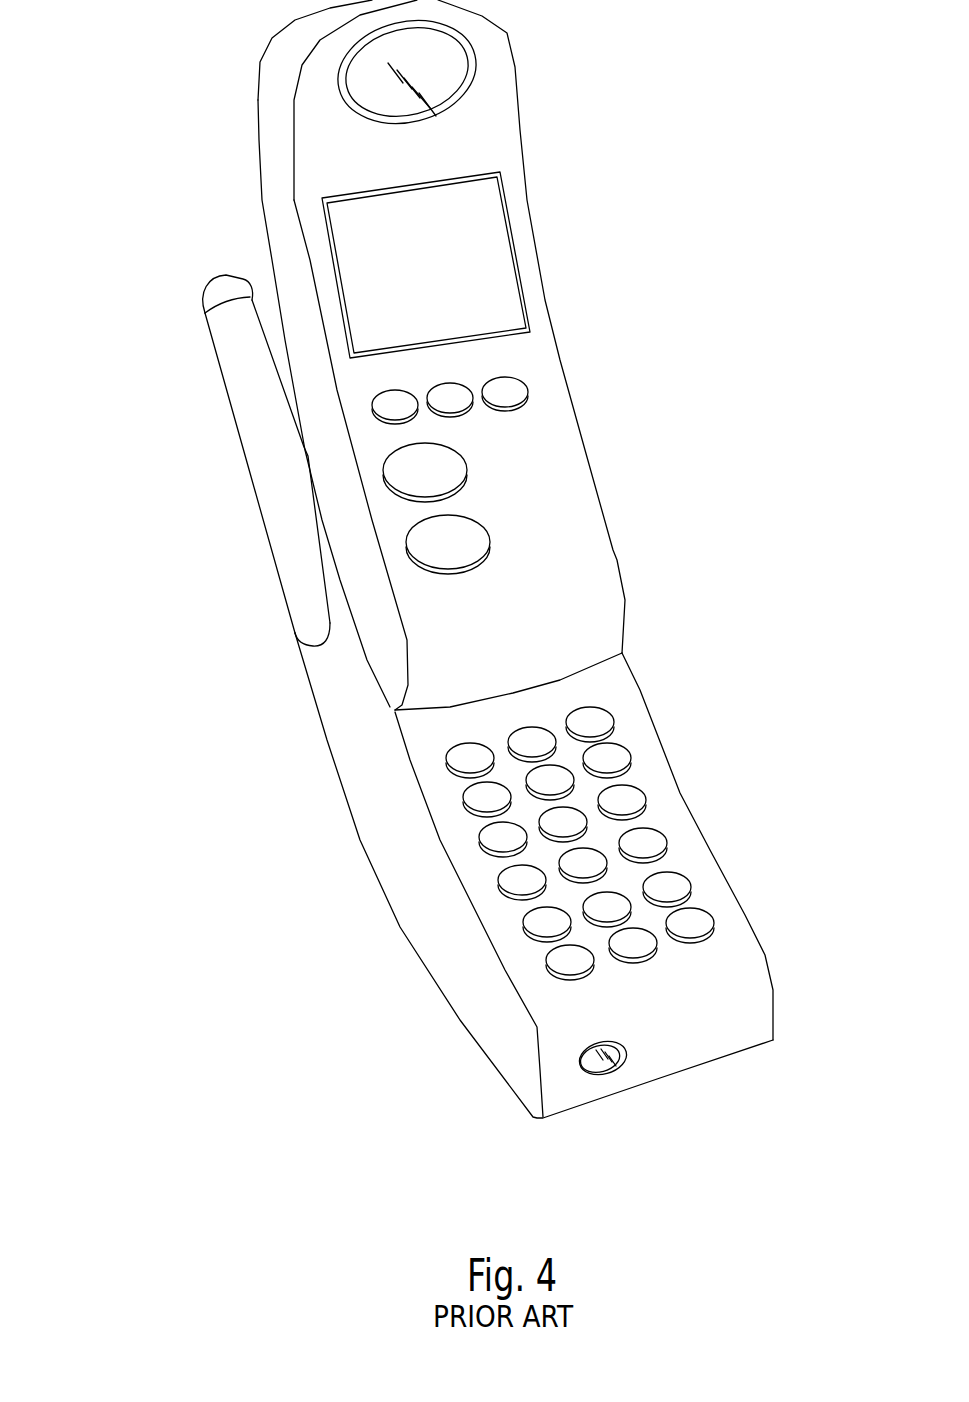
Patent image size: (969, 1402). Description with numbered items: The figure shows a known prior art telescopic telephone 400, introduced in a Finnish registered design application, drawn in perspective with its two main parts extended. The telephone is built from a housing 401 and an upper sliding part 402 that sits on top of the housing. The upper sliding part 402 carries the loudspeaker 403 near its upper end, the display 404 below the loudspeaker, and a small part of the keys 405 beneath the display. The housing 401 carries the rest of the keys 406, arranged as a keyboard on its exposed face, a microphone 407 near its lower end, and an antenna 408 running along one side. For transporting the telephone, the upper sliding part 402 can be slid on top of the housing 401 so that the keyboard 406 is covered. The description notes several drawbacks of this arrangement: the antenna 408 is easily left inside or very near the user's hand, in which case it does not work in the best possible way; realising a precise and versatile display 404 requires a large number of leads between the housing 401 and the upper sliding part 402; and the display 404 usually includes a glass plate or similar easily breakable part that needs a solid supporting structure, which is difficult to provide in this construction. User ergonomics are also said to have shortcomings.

The telescopic telephone 400 is at (414, 559).
The housing 401 is at (507, 875).
The upper sliding part 402 is at (381, 355).
The loudspeaker 403 is at (462, 72).
The display 404 is at (474, 265).
The keys 405 is at (625, 543).
The keys 406 is at (763, 925).
The microphone 407 is at (673, 1102).
The antenna 408 is at (235, 460).